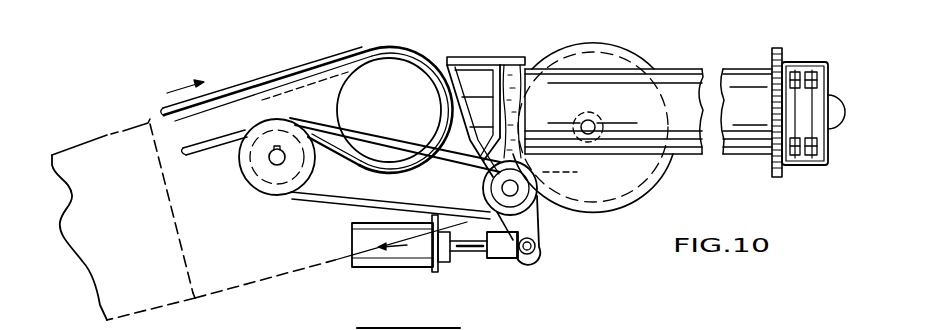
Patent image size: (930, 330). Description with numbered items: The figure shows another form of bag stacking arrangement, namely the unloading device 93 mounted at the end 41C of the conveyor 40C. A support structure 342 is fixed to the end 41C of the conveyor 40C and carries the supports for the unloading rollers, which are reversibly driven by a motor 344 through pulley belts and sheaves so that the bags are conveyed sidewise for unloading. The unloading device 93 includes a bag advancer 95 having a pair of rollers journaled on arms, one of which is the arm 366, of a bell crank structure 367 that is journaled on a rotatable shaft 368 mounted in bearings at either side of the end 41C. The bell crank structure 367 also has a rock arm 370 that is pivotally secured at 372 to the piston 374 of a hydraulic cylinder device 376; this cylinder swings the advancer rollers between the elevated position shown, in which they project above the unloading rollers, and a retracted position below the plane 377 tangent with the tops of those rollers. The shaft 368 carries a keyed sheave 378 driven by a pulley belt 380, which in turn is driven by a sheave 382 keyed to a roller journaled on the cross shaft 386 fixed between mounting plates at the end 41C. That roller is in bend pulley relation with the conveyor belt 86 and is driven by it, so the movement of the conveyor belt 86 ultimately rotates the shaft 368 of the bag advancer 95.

The conveyor 40C is at (104, 128).
The end of conveyor 41C is at (268, 105).
The conveyor belt 86 is at (307, 64).
The support structure 342 is at (511, 55).
The arm of bell crank structure 366 is at (547, 185).
The bag advancer 95 is at (653, 61).
The plane 377 is at (752, 70).
The unloading device 93 is at (795, 52).
The bell crank structure 367 is at (580, 175).
The sheave 378 is at (514, 191).
The rotatable shaft 368 is at (537, 212).
The cross shaft 386 is at (271, 159).
The sheave 382 is at (264, 194).
The pulley belt 380 is at (327, 200).
The hydraulic cylinder device 376 is at (398, 258).
The piston 374 is at (469, 256).
The pivot 372 is at (523, 255).
The rock arm 370 is at (538, 224).
The motor 344 is at (460, 328).